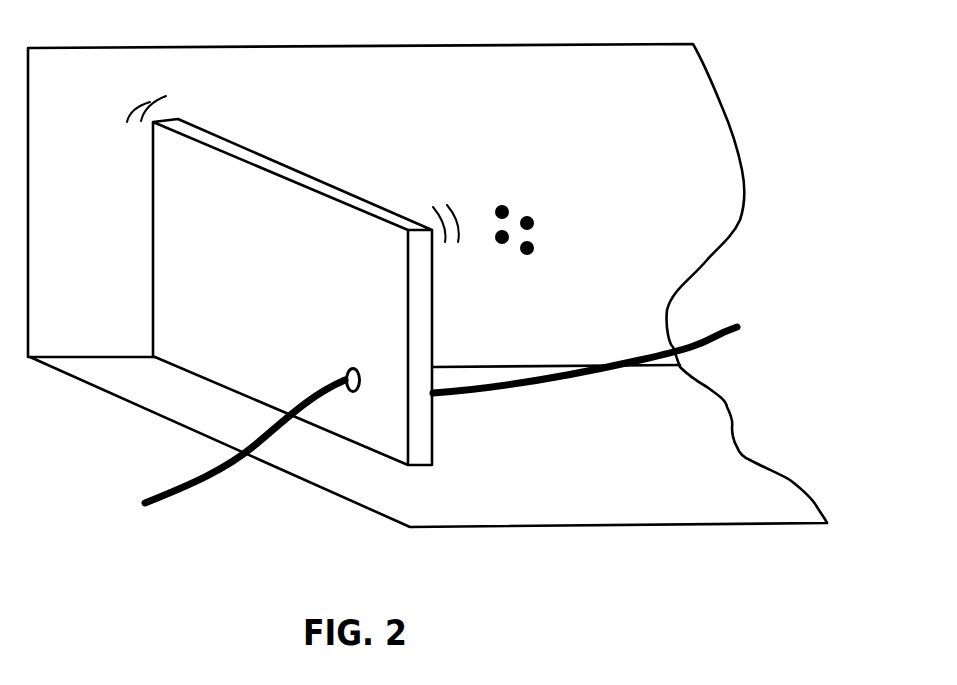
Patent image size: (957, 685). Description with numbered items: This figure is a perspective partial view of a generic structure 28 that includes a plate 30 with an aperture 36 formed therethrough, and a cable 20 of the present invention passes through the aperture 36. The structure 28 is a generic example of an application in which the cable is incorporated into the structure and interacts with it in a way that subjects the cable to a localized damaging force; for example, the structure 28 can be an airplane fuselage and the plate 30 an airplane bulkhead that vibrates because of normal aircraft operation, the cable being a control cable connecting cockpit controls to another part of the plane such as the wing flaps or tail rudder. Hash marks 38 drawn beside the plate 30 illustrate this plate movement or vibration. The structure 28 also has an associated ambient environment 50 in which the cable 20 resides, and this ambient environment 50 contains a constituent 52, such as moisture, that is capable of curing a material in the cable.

The cable 20 is at (183, 481).
The structure 28 is at (722, 106).
The plate 30 is at (293, 169).
The aperture 36 is at (350, 369).
The hash marks 38 is at (185, 98).
The ambient environment 50 is at (740, 294).
The constituent 52 is at (552, 231).